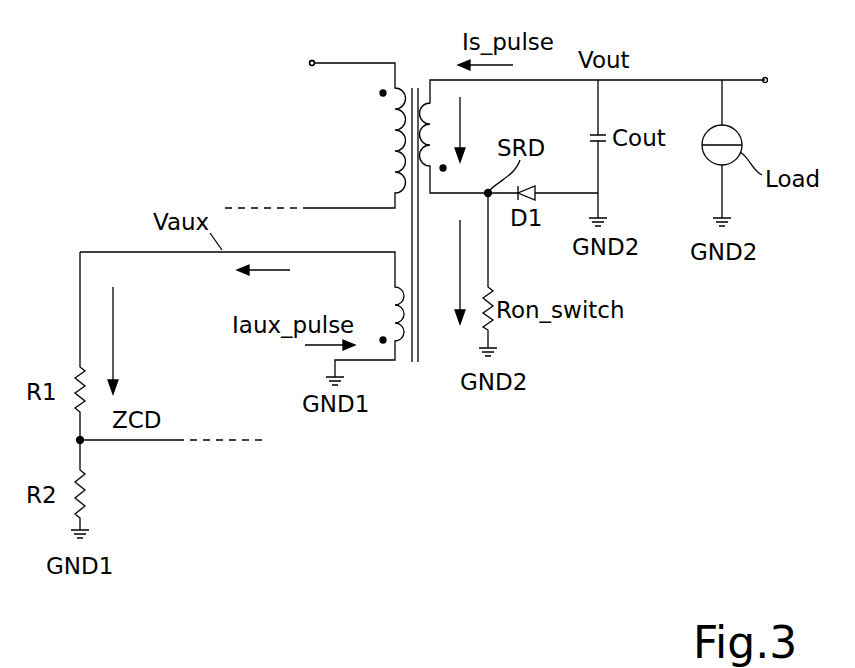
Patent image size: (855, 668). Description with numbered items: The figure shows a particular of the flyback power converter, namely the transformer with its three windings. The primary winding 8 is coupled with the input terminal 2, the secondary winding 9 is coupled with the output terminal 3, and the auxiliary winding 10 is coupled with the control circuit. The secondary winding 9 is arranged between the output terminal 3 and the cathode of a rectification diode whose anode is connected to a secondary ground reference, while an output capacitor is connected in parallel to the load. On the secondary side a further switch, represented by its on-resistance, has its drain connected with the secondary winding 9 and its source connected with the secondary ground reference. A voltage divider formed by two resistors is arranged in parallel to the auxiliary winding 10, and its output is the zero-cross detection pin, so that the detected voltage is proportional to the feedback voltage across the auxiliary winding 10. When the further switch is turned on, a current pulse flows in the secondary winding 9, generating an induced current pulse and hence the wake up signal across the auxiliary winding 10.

The input terminal 2 is at (310, 60).
The output terminal 3 is at (762, 76).
The primary winding 8 is at (380, 92).
The secondary winding 9 is at (432, 98).
The auxiliary winding 10 is at (399, 363).